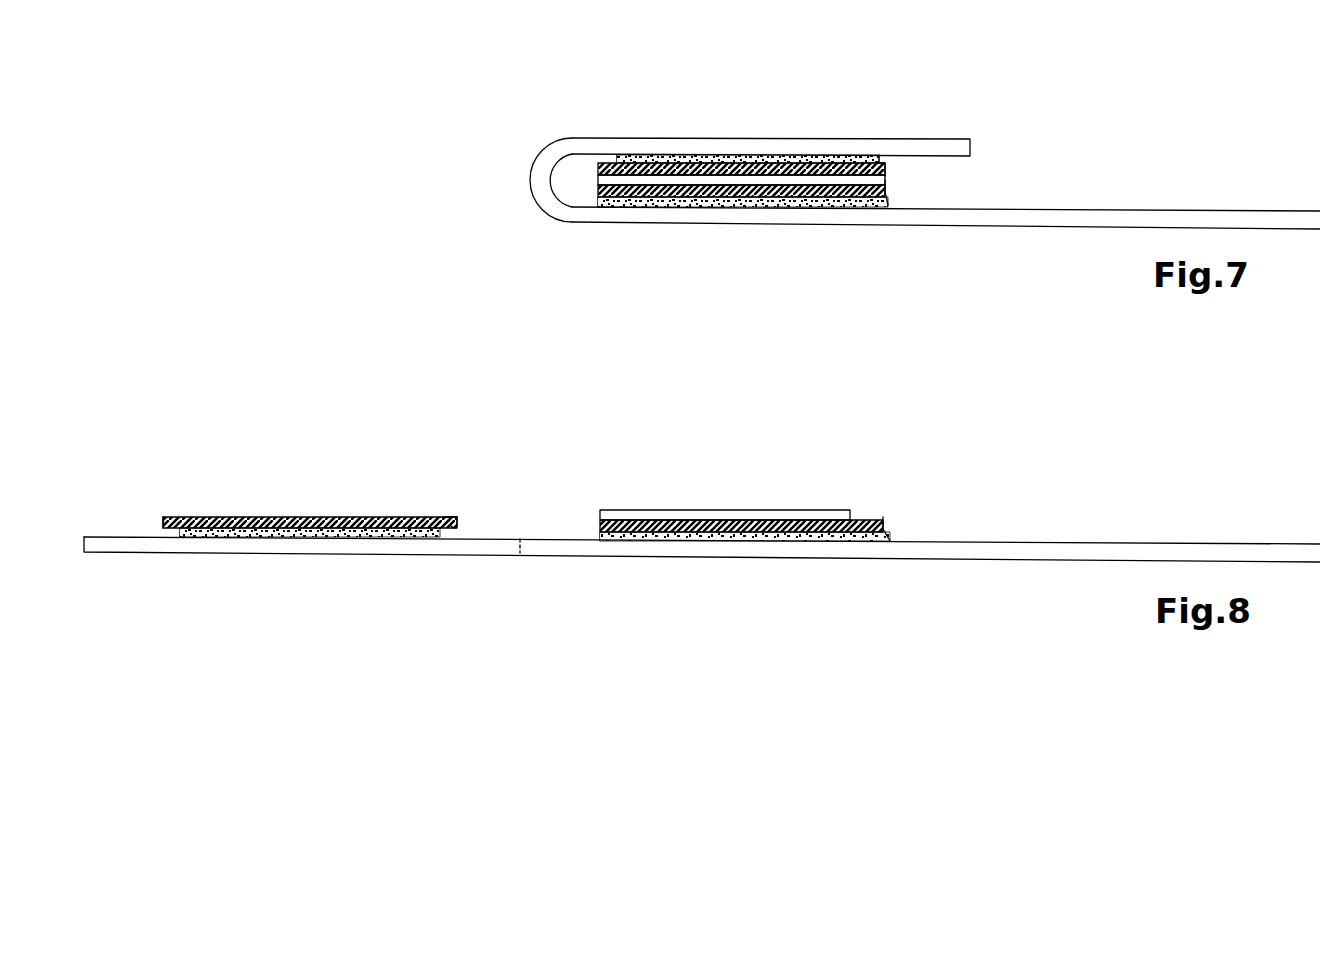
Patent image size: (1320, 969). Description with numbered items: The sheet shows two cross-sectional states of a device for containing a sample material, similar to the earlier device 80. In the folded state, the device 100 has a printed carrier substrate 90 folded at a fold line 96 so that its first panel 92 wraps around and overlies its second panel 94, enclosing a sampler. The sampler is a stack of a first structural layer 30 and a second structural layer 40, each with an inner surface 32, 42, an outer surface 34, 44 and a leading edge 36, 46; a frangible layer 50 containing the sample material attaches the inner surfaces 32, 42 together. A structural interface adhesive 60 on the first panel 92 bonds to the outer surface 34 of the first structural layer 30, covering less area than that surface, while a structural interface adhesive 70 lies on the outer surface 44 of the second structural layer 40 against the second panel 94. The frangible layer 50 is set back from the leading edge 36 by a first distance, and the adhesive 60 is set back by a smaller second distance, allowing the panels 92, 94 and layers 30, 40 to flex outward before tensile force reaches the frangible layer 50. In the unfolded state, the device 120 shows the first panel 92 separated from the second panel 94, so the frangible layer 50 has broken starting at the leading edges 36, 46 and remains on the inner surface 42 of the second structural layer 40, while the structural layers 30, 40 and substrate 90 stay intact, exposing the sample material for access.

In FIG. 7, the device 100 is at (505, 84).
In FIG. 8, the device 120 is at (260, 434).
In FIG. 7, the device 80 is at (1012, 119).
In FIG. 7, the printed carrier substrate 90 is at (620, 135).
In FIG. 8, the printed carrier substrate 90 is at (254, 556).
In FIG. 7, the first panel 92 is at (540, 152).
In FIG. 8, the first panel 92 is at (311, 546).
In FIG. 7, the second panel 94 is at (572, 212).
In FIG. 8, the second panel 94 is at (575, 548).
In FIG. 7, the fold line 96 is at (531, 182).
In FIG. 8, the fold line 96 is at (519, 556).
In FIG. 7, the first structural layer 30 is at (661, 165).
In FIG. 8, the first structural layer 30 is at (353, 517).
In FIG. 7, the inner surface 32 is at (888, 176).
In FIG. 8, the inner surface 32 is at (444, 517).
In FIG. 7, the outer surface 34 is at (885, 165).
In FIG. 8, the outer surface 34 is at (463, 527).
In FIG. 7, the leading edge 36 is at (890, 169).
In FIG. 8, the leading edge 36 is at (163, 517).
In FIG. 7, the second structural layer 40 is at (626, 191).
In FIG. 8, the second structural layer 40 is at (628, 530).
In FIG. 7, the inner surface 42 is at (886, 186).
In FIG. 8, the inner surface 42 is at (887, 517).
In FIG. 7, the outer surface 44 is at (882, 196).
In FIG. 8, the outer surface 44 is at (883, 534).
In FIG. 7, the leading edge 46 is at (887, 188).
In FIG. 8, the leading edge 46 is at (888, 523).
In FIG. 7, the frangible layer 50 is at (736, 178).
In FIG. 8, the frangible layer 50 is at (736, 516).
In FIG. 7, the structural interface adhesive 60 is at (804, 157).
In FIG. 8, the structural interface adhesive 60 is at (165, 533).
In FIG. 7, the structural interface adhesive 70 is at (681, 201).
In FIG. 8, the structural interface adhesive 70 is at (681, 539).